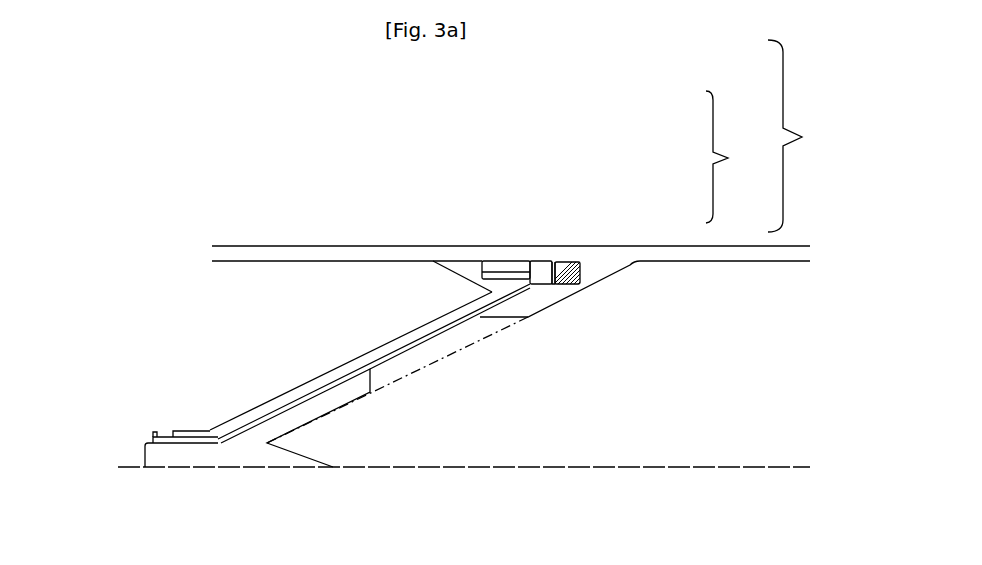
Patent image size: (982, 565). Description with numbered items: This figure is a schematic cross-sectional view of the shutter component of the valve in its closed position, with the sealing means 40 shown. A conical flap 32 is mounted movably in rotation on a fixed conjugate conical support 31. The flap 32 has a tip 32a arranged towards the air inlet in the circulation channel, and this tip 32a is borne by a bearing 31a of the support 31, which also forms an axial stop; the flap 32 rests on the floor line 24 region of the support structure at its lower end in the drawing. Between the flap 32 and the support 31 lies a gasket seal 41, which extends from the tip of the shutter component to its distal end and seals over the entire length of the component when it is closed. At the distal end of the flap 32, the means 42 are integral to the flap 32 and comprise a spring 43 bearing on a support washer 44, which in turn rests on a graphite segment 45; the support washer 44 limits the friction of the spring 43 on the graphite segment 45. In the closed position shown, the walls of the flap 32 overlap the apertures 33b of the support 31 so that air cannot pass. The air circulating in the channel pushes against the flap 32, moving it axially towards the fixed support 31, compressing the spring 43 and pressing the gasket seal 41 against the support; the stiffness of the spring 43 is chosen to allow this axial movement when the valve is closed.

The floor 24 is at (760, 467).
The fixed conical support 31 is at (347, 397).
The bearing 31a is at (177, 447).
The conical flap 32 is at (325, 373).
The tip 32a is at (197, 430).
The apertures 33b is at (448, 350).
The sealing means 40 is at (803, 136).
The gasket seal 41 is at (422, 328).
The means 42 is at (735, 157).
The spring 43 is at (568, 262).
The support washer 44 is at (552, 261).
The graphite segment 45 is at (537, 261).